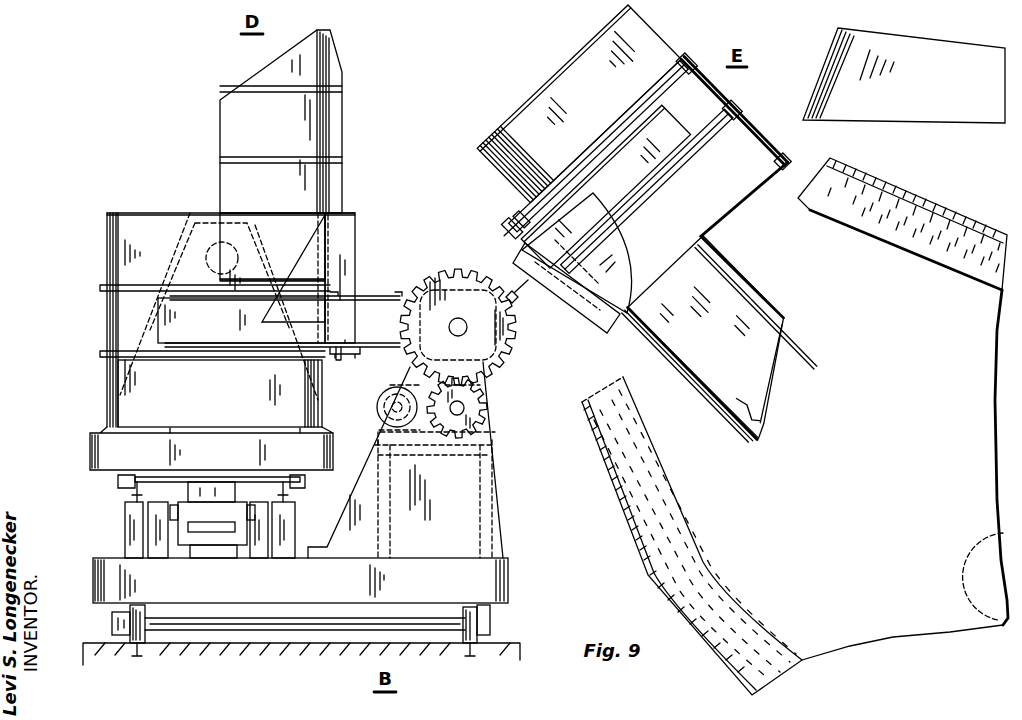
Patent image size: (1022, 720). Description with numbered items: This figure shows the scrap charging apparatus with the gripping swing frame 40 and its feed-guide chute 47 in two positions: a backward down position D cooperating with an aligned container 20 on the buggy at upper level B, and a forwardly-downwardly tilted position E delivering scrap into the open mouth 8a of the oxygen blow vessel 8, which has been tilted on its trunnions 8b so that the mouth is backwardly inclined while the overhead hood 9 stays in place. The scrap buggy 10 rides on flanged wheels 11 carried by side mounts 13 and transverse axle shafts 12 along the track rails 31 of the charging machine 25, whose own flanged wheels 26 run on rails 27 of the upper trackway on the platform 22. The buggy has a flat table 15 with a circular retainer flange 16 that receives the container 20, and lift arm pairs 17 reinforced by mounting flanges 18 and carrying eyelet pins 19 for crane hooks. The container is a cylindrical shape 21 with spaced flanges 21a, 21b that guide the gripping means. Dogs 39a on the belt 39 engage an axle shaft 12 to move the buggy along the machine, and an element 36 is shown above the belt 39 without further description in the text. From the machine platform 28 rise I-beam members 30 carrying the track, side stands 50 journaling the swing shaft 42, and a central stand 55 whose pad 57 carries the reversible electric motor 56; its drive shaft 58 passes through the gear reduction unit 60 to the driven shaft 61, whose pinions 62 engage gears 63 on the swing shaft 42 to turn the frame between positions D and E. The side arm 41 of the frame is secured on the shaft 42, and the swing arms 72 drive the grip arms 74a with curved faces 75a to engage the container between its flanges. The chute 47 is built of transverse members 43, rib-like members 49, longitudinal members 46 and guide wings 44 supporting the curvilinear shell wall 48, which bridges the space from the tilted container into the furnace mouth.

The oxygen blow vessel 8 is at (883, 509).
The open mouth 8a is at (798, 206).
The trunnions 8b is at (960, 565).
The overhead hood 9 is at (947, 113).
The scrap buggy 10 is at (84, 458).
The flanged wheels 11 is at (118, 484).
The transverse axle shafts 12 is at (172, 482).
The side mounts 13 is at (292, 486).
The table 15 is at (238, 427).
The retainer flange 16 is at (100, 432).
The lift arm pair 17 is at (188, 240).
The mounting flange 18 is at (107, 415).
The eyelet pin 19 is at (208, 225).
The container 20 is at (136, 243).
The cylindrical shape 21 is at (107, 252).
The upper flange 21a is at (104, 288).
The lower flange 21b is at (104, 354).
The platform 22 is at (292, 640).
The charging machine 25 is at (418, 592).
The flanged wheels 26 is at (120, 616).
The rails 27 is at (140, 652).
The platform 28 is at (503, 560).
The I-beam members 30 is at (125, 518).
The track rails 31 is at (125, 500).
The gear box 36 is at (238, 500).
The belt 39 is at (185, 545).
The dogs 39a is at (208, 480).
The gripping swing frame 40 is at (330, 252).
The side arm 41 is at (158, 318).
The swing shaft 42 is at (468, 328).
The transverse member 43 is at (355, 230).
The guide wing 44 is at (305, 250).
The longitudinally-extending members 46 is at (342, 124).
The feed-guide chute 47 is at (220, 126).
The shell wall 48 is at (766, 432).
The rib-like member 49 is at (228, 161).
The side stand 50 is at (503, 530).
The central stand 55 is at (495, 493).
The reversible electric motor 56 is at (378, 408).
The pad 57 is at (385, 441).
The drive shaft 58 is at (385, 428).
The gear reduction unit 60 is at (498, 398).
The driven shaft 61 is at (465, 408).
The pinion 62 is at (480, 420).
The gear 63 is at (520, 297).
The swing arm 72 is at (342, 360).
The upper grip arm 74a is at (368, 296).
The curved inner edge face 75a is at (672, 173).